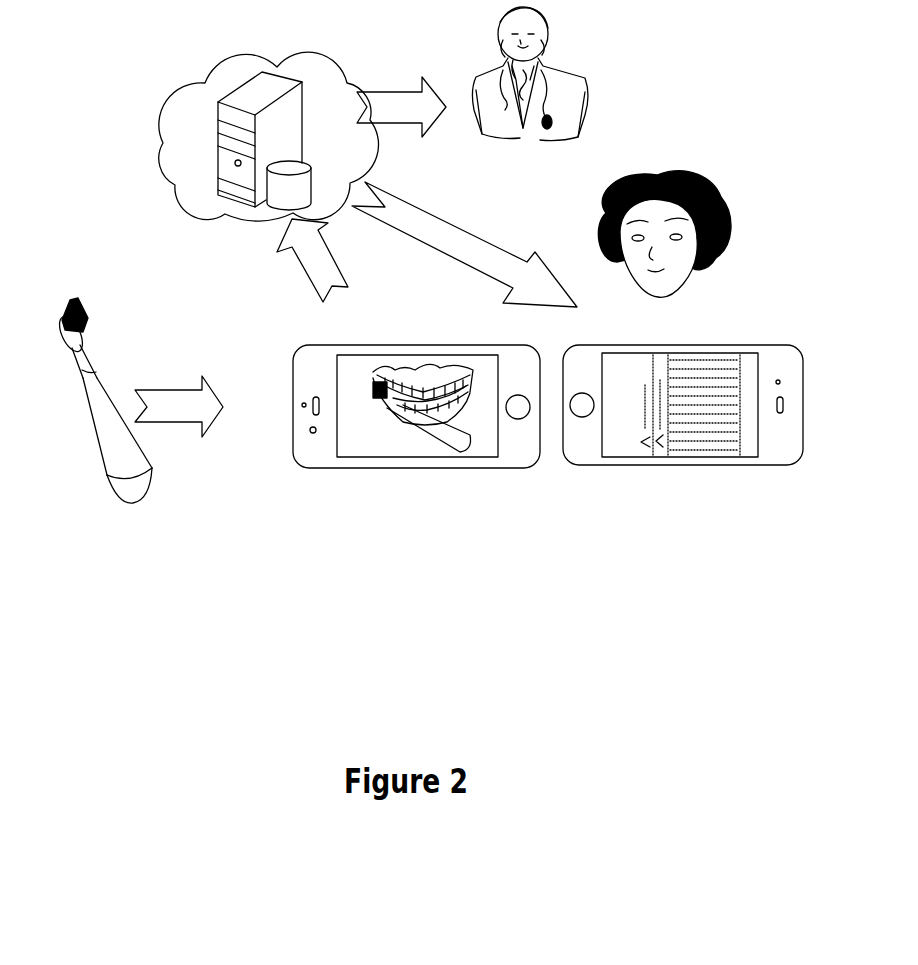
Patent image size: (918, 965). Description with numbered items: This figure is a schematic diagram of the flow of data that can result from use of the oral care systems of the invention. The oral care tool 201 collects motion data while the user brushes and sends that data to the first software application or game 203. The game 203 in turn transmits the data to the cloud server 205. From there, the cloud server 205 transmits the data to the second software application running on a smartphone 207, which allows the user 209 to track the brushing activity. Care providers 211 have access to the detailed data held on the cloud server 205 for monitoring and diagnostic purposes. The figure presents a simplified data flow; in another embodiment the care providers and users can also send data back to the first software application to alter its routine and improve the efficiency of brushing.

The oral care tool 201 is at (103, 430).
The first software application or game 203 is at (416, 454).
The cloud server 205 is at (212, 136).
The smartphone 207 is at (683, 454).
The user 209 is at (693, 234).
The care providers 211 is at (568, 74).